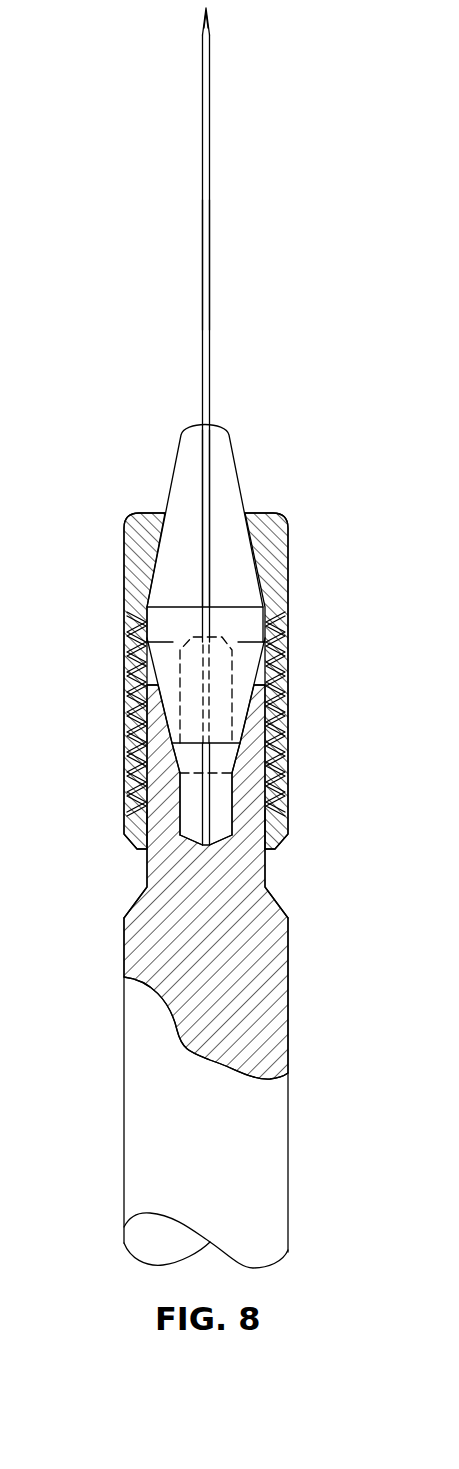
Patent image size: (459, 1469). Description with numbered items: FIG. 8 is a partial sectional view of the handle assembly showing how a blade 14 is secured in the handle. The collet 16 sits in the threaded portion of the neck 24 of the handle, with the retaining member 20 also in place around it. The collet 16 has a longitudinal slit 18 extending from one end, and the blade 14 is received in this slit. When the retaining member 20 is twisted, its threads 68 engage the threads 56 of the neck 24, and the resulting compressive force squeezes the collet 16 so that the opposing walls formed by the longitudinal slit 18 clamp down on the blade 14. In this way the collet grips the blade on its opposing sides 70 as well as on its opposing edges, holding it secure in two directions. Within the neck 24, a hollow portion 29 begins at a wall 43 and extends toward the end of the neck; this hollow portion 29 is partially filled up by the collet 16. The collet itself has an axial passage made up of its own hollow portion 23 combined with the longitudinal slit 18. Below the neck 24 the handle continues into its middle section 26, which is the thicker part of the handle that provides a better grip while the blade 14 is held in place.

The blade 14 is at (202, 157).
The sides 70 is at (202, 266).
The collet 16 is at (231, 445).
The longitudinal slit 18 is at (210, 480).
The retaining member 20 is at (124, 548).
The hollow portion of the collet 23 is at (218, 720).
The threads 56 is at (138, 758).
The hollow portion 29 is at (190, 808).
The threads of the retaining member 68 is at (278, 790).
The neck 24 is at (147, 866).
The wall 43 is at (222, 848).
The middle section 26 is at (283, 1163).